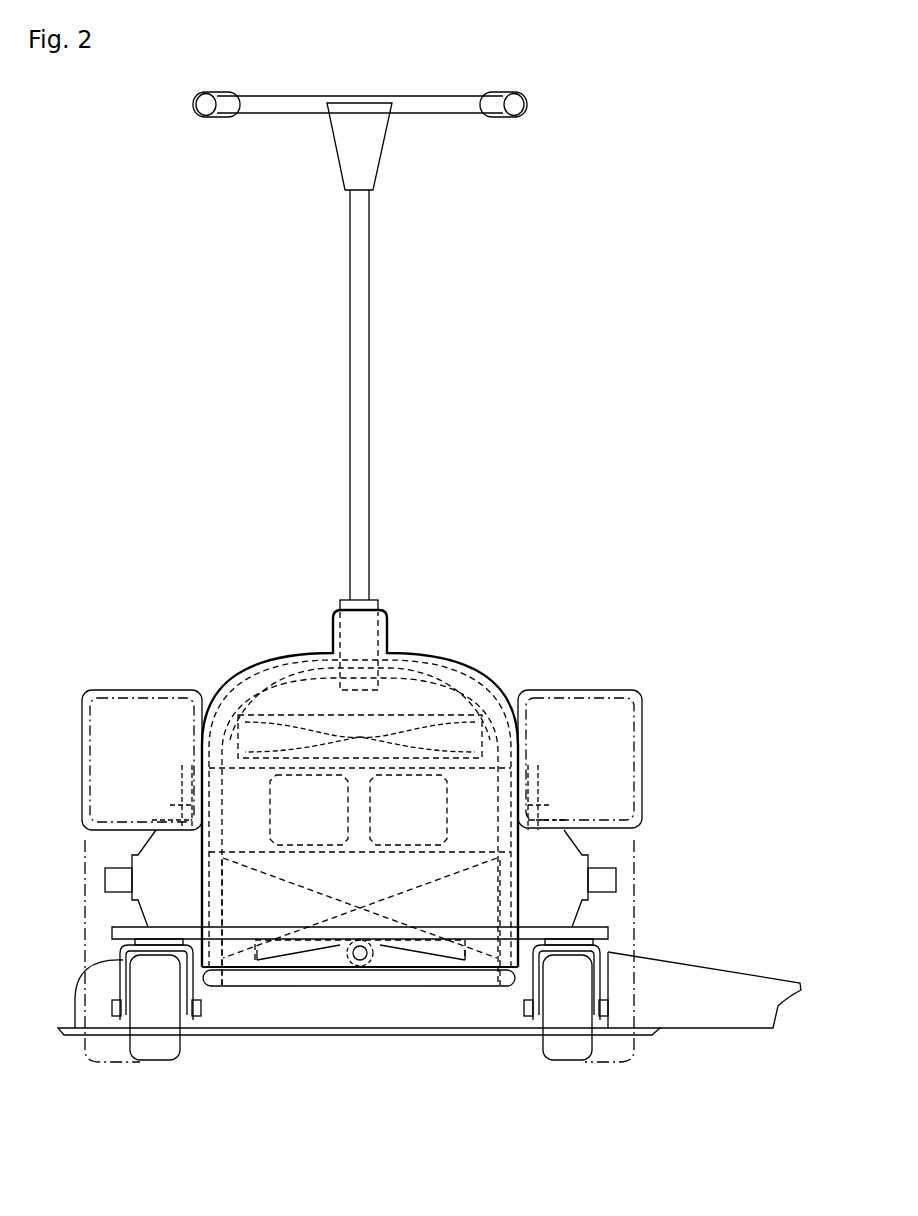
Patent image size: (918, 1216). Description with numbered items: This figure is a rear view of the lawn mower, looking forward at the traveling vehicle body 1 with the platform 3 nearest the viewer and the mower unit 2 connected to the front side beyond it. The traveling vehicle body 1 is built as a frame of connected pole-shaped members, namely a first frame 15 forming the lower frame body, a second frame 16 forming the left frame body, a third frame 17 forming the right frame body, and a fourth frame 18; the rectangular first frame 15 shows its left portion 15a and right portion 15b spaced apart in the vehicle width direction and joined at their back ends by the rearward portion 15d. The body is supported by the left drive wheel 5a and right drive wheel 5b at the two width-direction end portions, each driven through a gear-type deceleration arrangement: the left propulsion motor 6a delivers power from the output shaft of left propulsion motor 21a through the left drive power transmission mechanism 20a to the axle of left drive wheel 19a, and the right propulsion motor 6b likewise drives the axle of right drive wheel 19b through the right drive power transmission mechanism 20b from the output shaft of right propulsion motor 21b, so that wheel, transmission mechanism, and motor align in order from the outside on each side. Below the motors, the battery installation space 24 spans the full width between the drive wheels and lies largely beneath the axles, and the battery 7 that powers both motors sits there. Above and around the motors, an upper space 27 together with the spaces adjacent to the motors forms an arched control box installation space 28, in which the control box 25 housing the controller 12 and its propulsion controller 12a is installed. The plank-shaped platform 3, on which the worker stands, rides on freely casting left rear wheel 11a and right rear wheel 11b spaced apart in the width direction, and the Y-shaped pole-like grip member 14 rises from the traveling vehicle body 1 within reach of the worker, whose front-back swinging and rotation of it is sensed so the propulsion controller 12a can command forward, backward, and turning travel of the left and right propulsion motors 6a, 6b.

The grip member 14 is at (520, 102).
The traveling vehicle body 1 is at (243, 666).
The control box 25 is at (421, 812).
The controller 12 is at (360, 831).
The propulsion controller 12a is at (470, 697).
The fourth frame 18 is at (425, 657).
The upper space 27 is at (310, 650).
The control box installation space 28 is at (359, 651).
The left propulsion motor 6a is at (357, 758).
The right propulsion motor 6b is at (410, 758).
The battery 7 is at (338, 842).
The second frame 16 is at (210, 750).
The third frame 17 is at (520, 748).
The output shaft of left propulsion motor 21a is at (188, 808).
The output shaft of right propulsion motor 21b is at (540, 808).
The platform 3 is at (286, 926).
The battery installation space 24 is at (464, 904).
The left drive power transmission mechanism 20a is at (150, 905).
The right drive power transmission mechanism 20b is at (570, 905).
The axle of left drive wheel 19a is at (105, 880).
The axle of right drive wheel 19b is at (616, 880).
The first frame 15 is at (297, 986).
The left portion 15a is at (218, 988).
The right portion 15b is at (510, 988).
The rearward portion 15d is at (382, 990).
The left rear wheel 11a is at (158, 1062).
The right rear wheel 11b is at (568, 1062).
The mower unit 2 is at (327, 1036).
The left drive wheel 5a is at (92, 1064).
The right drive wheel 5b is at (632, 1064).